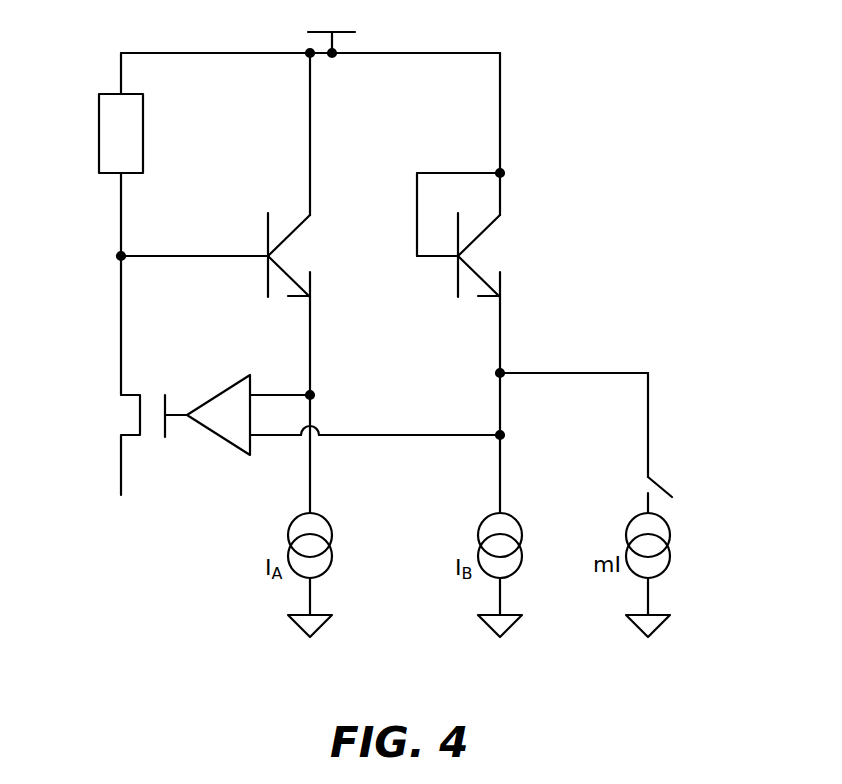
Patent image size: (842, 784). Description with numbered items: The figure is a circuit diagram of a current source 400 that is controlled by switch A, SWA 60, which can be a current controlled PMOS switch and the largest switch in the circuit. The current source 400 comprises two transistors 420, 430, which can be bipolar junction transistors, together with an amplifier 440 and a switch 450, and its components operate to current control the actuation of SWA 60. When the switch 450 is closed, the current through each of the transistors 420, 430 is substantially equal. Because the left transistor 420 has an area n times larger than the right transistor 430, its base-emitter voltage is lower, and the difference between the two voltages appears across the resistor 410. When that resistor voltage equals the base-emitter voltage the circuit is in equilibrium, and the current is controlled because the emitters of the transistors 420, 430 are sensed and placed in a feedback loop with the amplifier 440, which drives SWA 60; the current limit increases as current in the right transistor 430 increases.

The current source 400 is at (560, 127).
The resistor 410 is at (99, 117).
The transistor 420 is at (295, 230).
The transistor 430 is at (483, 230).
The amplifier 440 is at (217, 392).
The switch 450 is at (662, 485).
The switch A (SWA) 60 is at (120, 468).